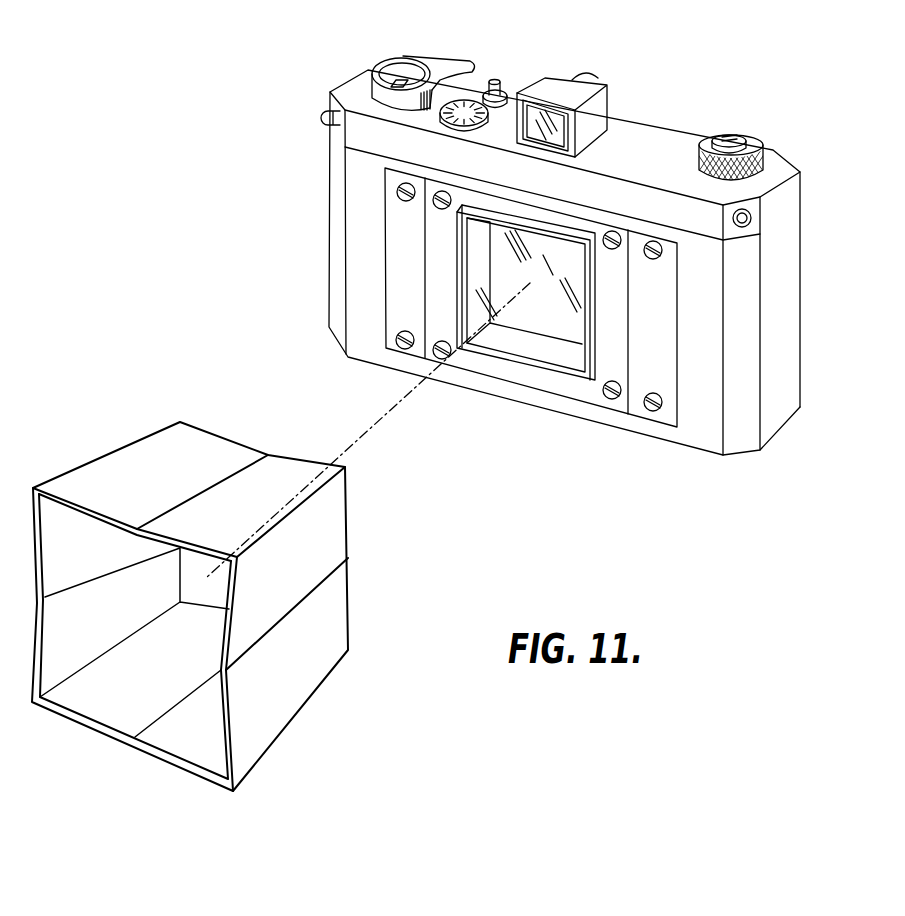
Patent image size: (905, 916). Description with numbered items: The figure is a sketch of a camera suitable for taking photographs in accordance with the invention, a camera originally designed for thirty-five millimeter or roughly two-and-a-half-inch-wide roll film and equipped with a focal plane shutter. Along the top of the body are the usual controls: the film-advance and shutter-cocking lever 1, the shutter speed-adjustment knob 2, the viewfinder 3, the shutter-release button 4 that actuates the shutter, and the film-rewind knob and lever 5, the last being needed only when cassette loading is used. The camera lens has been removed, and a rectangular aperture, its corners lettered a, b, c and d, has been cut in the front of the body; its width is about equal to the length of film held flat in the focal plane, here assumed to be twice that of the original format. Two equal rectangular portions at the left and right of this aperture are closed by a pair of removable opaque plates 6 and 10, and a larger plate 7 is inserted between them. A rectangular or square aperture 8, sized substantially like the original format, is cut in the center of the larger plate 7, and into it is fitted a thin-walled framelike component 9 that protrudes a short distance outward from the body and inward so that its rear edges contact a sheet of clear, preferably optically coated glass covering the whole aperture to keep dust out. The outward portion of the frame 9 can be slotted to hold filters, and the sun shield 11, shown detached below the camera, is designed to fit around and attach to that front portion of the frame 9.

The film-advance and shutter-cocking lever 1 is at (398, 52).
The shutter speed-adjustment knob 2 is at (470, 97).
The viewfinder 3 is at (621, 84).
The shutter-release button 4 is at (511, 84).
The film-rewind knob and lever 5 is at (757, 137).
The opaque plate 6 is at (402, 253).
The larger plate 7 is at (443, 302).
The aperture 8 is at (540, 318).
The framelike component 9 is at (562, 380).
The opaque plate 10 is at (662, 328).
The sun shield 11 is at (117, 427).